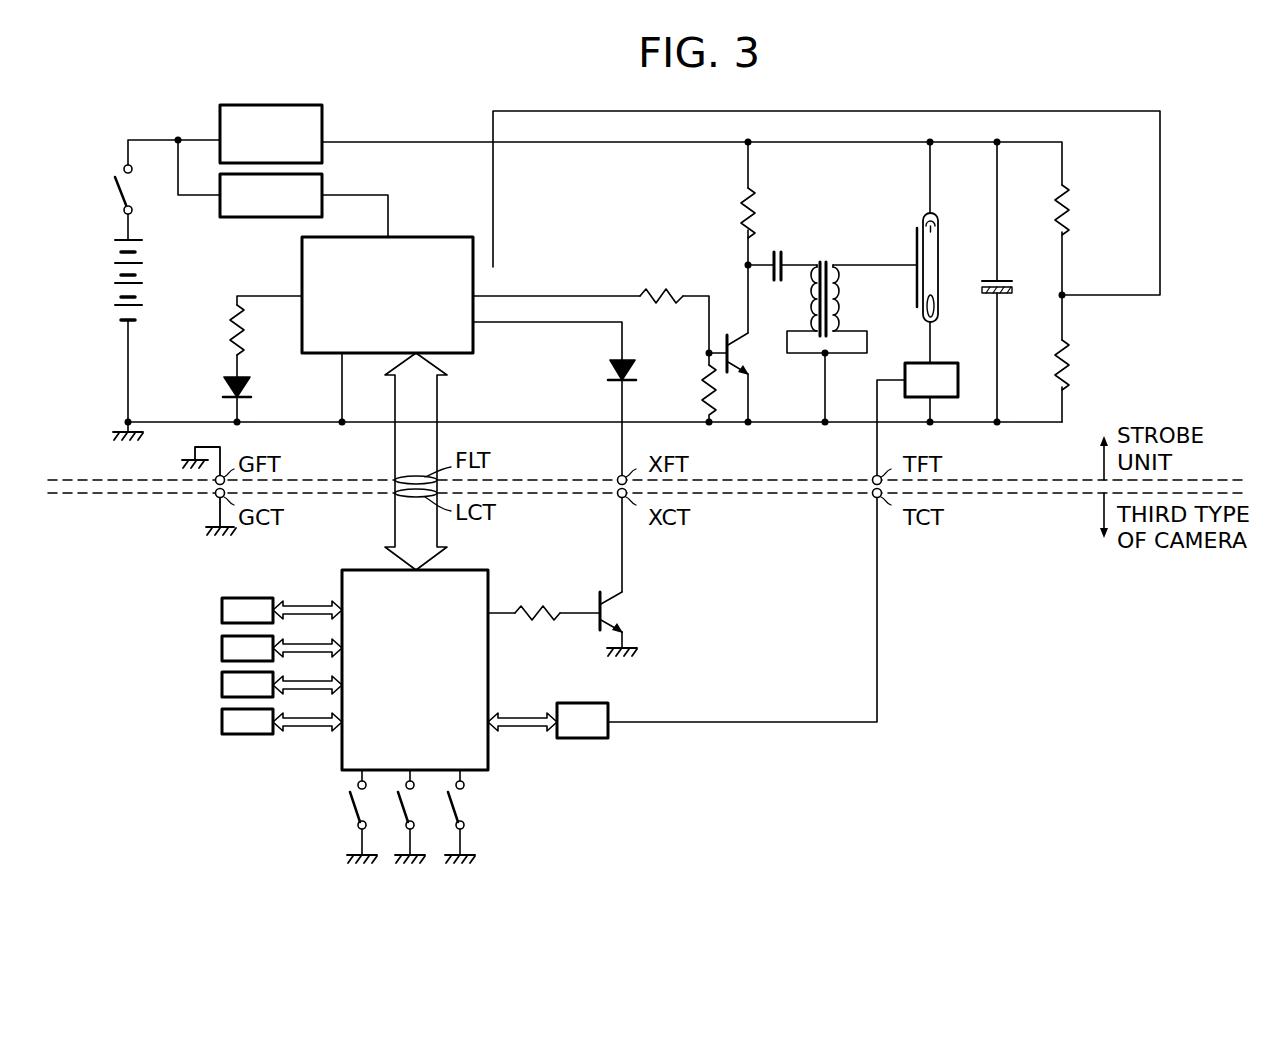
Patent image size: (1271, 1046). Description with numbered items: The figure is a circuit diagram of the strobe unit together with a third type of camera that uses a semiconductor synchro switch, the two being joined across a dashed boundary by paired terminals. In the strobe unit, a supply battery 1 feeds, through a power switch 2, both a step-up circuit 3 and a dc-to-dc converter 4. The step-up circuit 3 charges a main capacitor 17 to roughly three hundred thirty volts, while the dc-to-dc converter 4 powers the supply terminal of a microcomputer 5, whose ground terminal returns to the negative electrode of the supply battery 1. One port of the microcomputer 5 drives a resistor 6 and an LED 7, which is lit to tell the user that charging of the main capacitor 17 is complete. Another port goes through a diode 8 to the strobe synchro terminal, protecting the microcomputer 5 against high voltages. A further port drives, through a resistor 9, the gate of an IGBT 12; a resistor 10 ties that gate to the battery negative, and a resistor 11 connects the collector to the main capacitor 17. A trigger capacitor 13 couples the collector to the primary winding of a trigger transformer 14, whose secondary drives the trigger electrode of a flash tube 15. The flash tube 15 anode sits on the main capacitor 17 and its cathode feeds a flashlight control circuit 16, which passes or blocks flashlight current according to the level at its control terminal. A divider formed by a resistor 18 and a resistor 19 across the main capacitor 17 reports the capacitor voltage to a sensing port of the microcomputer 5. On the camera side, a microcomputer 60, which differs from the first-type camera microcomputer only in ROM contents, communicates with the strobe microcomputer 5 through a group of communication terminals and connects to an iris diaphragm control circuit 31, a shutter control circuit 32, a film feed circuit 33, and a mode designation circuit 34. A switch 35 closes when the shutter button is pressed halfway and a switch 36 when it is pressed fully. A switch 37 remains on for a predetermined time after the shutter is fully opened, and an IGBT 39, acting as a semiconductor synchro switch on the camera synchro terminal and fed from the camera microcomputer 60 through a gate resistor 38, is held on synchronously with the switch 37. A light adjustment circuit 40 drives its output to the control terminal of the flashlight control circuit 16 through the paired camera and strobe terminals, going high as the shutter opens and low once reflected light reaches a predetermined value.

The supply battery 1 is at (106, 279).
The power switch 2 is at (135, 190).
The step-up circuit 3 is at (267, 105).
The dc-to-dc converter 4 is at (322, 194).
The microcomputer 5 is at (422, 237).
The resistor 6 is at (228, 328).
The light-emitting diode (LED) 7 is at (228, 386).
The diode 8 is at (610, 369).
The resistor 9 is at (660, 290).
The resistor 10 is at (704, 386).
The resistor 11 is at (739, 207).
The insulated-gate bipolar transistor (IGBT) 12 is at (744, 361).
The trigger capacitor 13 is at (774, 250).
The trigger transformer 14 is at (820, 265).
The flash tube 15 is at (939, 236).
The flashlight control circuit 16 is at (950, 362).
The main capacitor 17 is at (1002, 276).
The resistor 18 is at (1072, 213).
The resistor 19 is at (1072, 370).
The iris diaphragm control circuit 31 is at (215, 611).
The shutter control circuit 32 is at (215, 649).
The film feed circuit 33 is at (215, 686).
The mode designation circuit 34 is at (215, 723).
The switch 35 is at (351, 814).
The switch 36 is at (402, 805).
The switch 37 is at (462, 803).
The resistor 38 is at (532, 622).
The IGBT 39 is at (620, 611).
The light adjustment circuit 40 is at (566, 702).
The microcomputer 60 is at (490, 582).